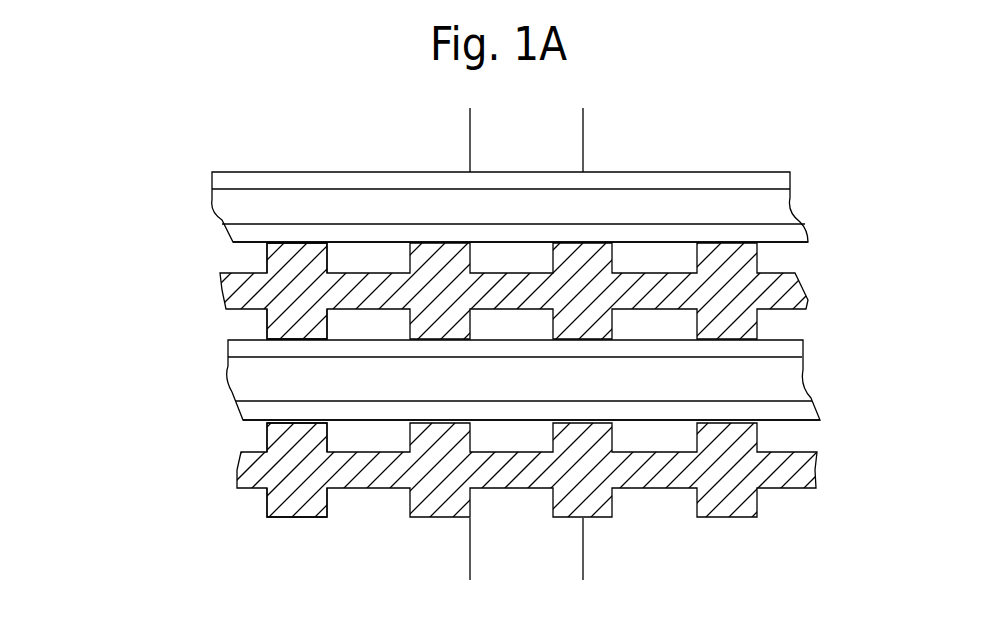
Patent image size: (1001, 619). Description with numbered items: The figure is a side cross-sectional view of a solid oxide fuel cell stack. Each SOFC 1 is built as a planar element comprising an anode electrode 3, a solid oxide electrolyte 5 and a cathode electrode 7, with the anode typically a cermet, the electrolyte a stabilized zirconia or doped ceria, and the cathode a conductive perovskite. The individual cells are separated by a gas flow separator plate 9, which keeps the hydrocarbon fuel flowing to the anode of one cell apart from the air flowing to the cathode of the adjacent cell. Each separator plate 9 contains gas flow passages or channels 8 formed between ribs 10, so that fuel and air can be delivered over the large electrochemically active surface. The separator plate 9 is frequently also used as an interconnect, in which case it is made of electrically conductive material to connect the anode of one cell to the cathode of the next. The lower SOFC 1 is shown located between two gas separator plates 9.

The SOFC 1 is at (825, 172).
The anode electrode 3 is at (212, 183).
The solid oxide electrolyte 5 is at (210, 209).
The cathode electrode 7 is at (230, 236).
The gas flow passages or channels 8 is at (360, 267).
The gas flow separator plate 9 is at (825, 255).
The ribs 10 is at (267, 260).